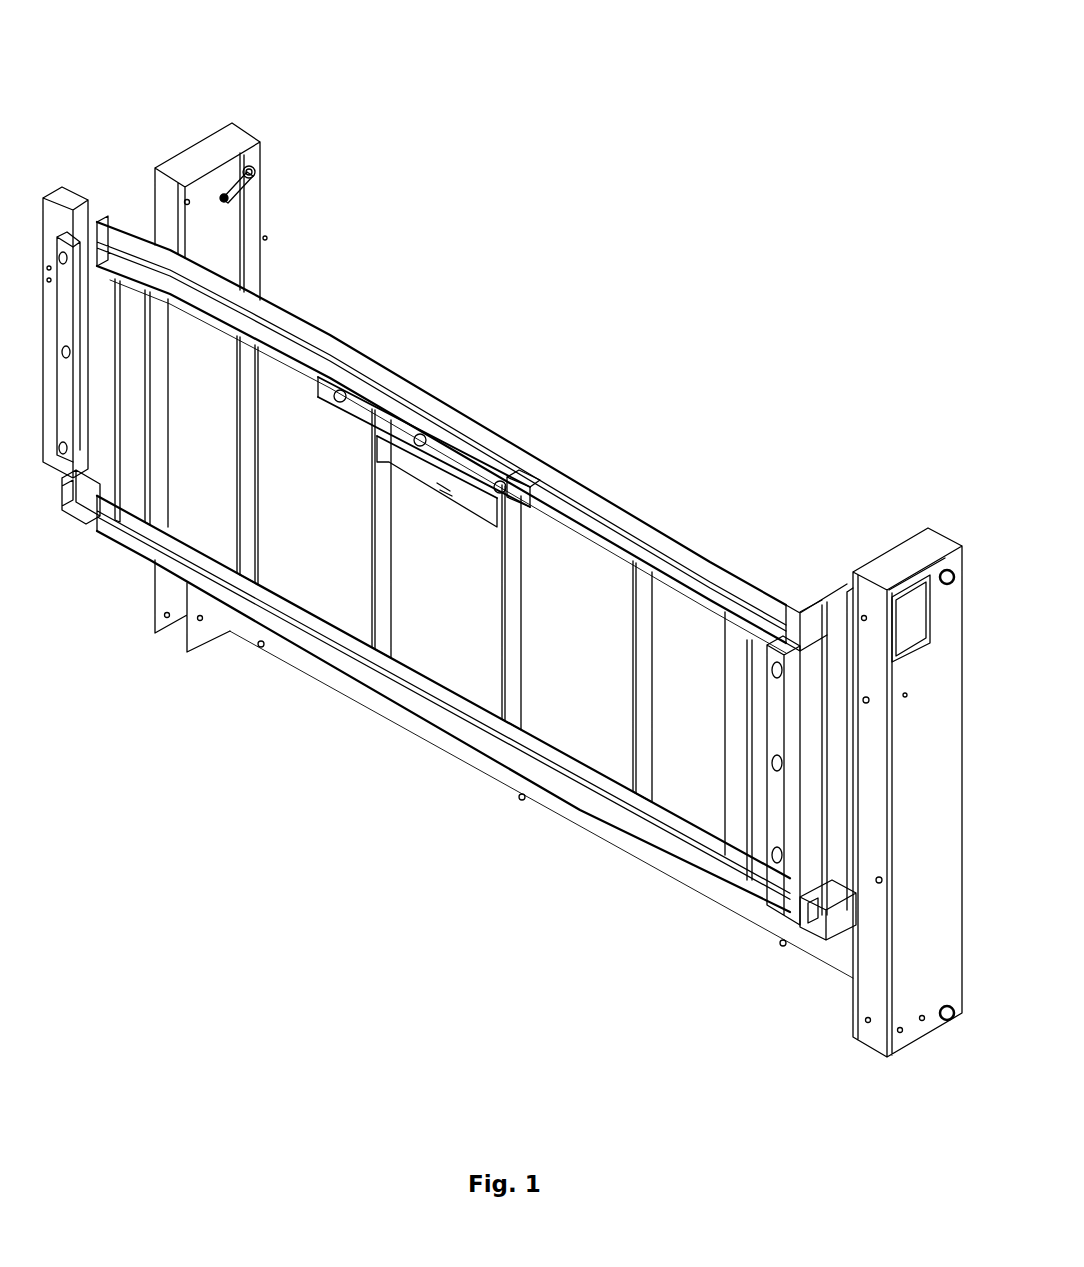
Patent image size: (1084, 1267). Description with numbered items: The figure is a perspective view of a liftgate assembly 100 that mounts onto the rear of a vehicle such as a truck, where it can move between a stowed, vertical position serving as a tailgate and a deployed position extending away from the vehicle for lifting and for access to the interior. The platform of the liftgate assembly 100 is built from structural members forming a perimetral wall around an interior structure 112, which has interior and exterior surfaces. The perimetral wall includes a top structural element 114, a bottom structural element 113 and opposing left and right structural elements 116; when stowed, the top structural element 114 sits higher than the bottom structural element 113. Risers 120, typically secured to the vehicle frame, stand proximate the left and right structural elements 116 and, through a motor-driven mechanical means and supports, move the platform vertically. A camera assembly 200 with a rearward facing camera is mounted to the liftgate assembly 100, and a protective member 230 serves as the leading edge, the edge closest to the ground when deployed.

The liftgate assembly 100 is at (213, 32).
The interior structure 112 is at (441, 632).
The bottom structural element 113 is at (157, 555).
The top structural element 114 is at (290, 332).
The left and right structural elements 116 is at (812, 887).
The riser 120 is at (236, 232).
The camera assembly 200 is at (434, 418).
The protective member 230 is at (781, 812).